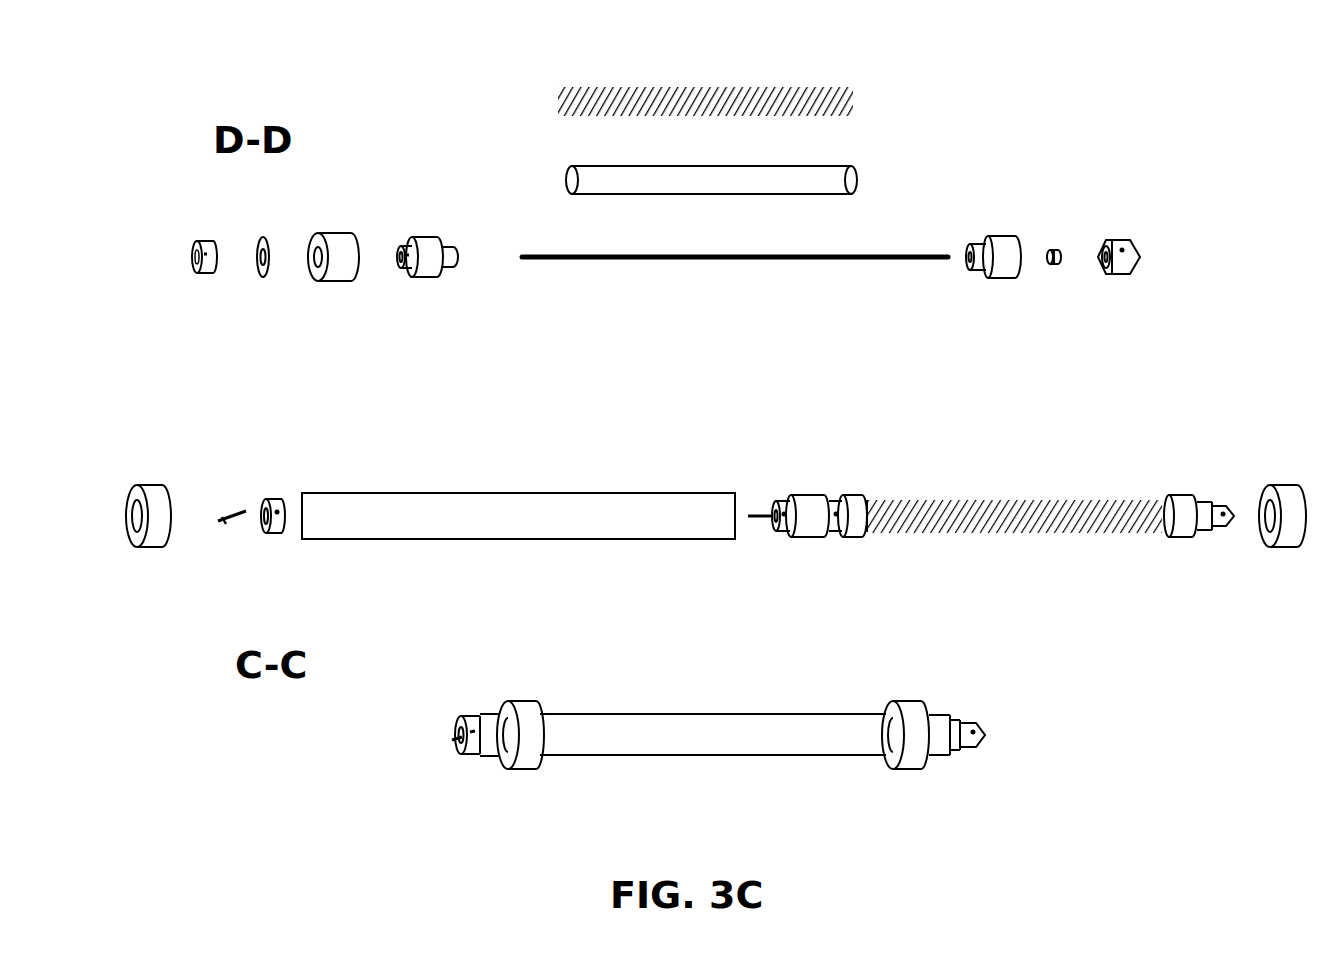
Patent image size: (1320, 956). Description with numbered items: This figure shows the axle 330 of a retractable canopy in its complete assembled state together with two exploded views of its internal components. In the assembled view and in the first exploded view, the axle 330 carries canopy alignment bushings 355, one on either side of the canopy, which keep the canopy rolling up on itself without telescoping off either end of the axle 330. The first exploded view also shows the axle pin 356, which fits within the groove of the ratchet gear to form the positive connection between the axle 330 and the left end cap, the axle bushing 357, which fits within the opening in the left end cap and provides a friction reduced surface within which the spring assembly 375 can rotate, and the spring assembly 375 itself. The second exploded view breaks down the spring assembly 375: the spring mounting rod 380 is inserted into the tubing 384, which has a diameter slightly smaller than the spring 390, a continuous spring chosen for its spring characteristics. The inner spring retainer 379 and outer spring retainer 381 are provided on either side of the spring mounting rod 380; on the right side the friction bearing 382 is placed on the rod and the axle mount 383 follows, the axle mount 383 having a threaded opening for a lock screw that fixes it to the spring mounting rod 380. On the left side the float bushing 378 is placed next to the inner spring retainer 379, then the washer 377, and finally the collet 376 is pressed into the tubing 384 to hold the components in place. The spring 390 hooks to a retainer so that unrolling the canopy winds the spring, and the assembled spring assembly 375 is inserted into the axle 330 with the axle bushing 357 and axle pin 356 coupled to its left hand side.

The axle 330 is at (455, 528).
The canopy alignment bushing 355 is at (148, 548).
The axle pin 356 is at (224, 526).
The axle bushing 357 is at (280, 534).
The spring assembly 375 is at (968, 521).
The collet 376 is at (203, 275).
The washer 377 is at (259, 278).
The float bushing 378 is at (341, 272).
The inner spring retainer 379 is at (429, 262).
The spring mounting rod 380 is at (689, 261).
The outer spring retainer 381 is at (1001, 272).
The friction bearing 382 is at (1052, 265).
The axle mount 383 is at (1133, 272).
The tubing 384 is at (563, 177).
The spring 390 is at (737, 88).